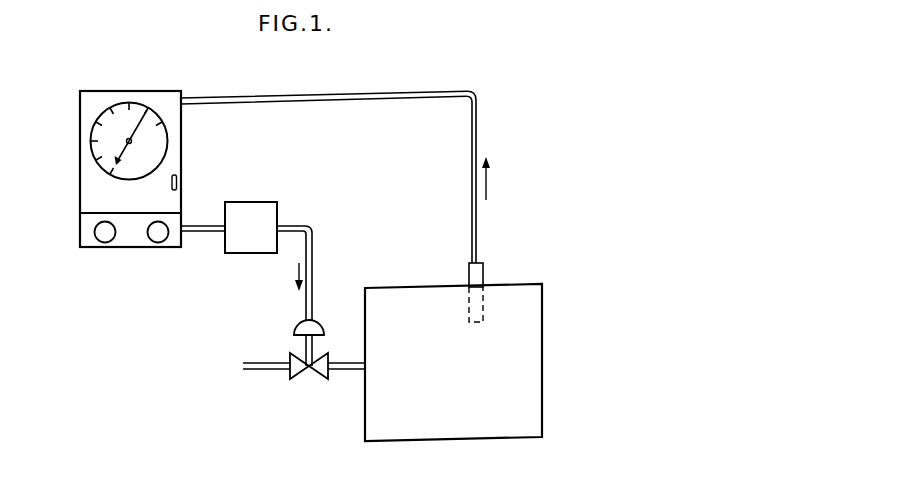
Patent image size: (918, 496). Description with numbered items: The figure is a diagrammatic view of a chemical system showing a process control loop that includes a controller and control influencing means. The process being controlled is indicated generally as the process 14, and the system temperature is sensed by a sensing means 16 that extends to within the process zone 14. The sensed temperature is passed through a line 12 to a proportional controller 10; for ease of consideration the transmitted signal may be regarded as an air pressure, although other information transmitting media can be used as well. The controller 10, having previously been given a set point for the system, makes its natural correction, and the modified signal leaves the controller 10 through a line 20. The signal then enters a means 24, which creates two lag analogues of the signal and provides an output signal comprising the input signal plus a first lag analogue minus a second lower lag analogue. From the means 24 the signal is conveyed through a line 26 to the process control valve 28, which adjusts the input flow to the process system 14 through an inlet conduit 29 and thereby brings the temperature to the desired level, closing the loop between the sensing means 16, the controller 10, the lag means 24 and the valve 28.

The proportional controller 10 is at (130, 89).
The line 12 is at (351, 92).
The process 14 is at (542, 367).
The temperature sensing means 16 is at (483, 275).
The line 20 is at (200, 224).
The lag analogue means 24 is at (251, 215).
The line 26 is at (313, 243).
The process control valve 28 is at (318, 327).
The inlet conduit 29 is at (273, 372).